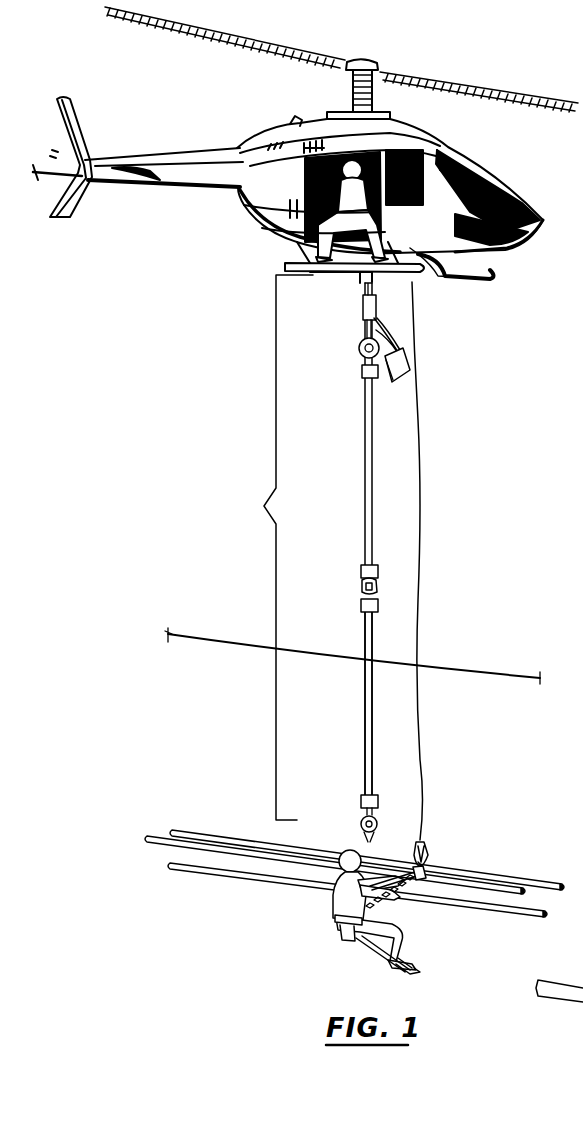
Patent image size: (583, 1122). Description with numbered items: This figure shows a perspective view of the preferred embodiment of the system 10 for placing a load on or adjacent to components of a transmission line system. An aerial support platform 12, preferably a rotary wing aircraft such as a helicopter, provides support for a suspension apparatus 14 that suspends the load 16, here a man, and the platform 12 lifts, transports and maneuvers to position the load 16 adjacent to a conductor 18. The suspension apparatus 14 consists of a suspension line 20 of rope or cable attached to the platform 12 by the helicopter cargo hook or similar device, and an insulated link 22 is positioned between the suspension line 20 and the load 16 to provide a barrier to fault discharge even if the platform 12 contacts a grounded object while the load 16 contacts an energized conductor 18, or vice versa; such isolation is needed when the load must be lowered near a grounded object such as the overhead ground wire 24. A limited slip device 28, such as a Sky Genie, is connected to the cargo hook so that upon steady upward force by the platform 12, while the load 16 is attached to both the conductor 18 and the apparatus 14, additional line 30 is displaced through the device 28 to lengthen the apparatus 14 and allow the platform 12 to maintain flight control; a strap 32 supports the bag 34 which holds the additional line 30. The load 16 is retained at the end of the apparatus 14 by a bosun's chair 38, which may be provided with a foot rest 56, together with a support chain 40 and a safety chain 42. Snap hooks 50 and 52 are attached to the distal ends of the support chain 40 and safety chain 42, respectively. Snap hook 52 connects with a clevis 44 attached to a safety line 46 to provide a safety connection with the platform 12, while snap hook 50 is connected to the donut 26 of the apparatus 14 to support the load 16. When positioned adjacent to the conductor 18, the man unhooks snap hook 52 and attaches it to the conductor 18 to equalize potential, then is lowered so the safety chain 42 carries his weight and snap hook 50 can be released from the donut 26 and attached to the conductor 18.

The system for placing a load on or adjacent to components of a transmission line sy 10 is at (243, 416).
The aerial support platform 12 is at (500, 169).
The suspension apparatus 14 is at (276, 547).
The load 16 is at (335, 904).
The conductor 18 is at (536, 869).
The suspension line 20 is at (363, 449).
The insulated link 22 is at (363, 712).
The overhead ground wire 24 is at (450, 666).
The donut 26 is at (378, 821).
The limited slip device 28 is at (362, 308).
The additional line 30 is at (362, 342).
The strap 32 is at (393, 333).
The bag 34 is at (408, 372).
The bosun's chair 38 is at (343, 935).
The support chain 40 is at (368, 871).
The safety chain 42 is at (395, 910).
The clevis 44 is at (428, 842).
The safety line 46 is at (418, 712).
The snap hook 50 is at (362, 834).
The snap hook 52 is at (426, 868).
The foot rest 56 is at (408, 968).